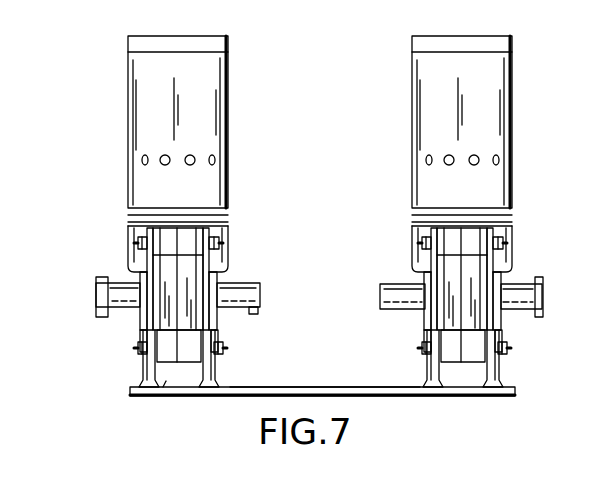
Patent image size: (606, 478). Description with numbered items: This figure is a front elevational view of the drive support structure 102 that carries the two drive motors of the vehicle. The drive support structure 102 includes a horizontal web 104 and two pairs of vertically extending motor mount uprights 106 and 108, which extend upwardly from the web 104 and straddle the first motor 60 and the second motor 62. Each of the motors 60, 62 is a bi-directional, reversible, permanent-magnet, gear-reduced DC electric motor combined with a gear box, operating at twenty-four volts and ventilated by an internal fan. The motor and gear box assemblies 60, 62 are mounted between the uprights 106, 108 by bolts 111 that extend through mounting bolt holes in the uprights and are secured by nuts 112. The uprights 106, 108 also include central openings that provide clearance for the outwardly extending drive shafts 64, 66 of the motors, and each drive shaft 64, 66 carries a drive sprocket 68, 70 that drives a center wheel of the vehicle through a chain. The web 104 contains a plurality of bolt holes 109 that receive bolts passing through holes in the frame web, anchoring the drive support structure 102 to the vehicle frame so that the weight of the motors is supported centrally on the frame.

The first motor 60 is at (237, 137).
The second motor 62 is at (401, 111).
The drive shaft 64 is at (118, 282).
The drive shaft 66 is at (518, 292).
The drive sprocket 68 is at (100, 281).
The drive sprocket 70 is at (545, 277).
The drive support structure 102 is at (127, 391).
The horizontal web 104 is at (325, 387).
The motor mount upright 106 is at (141, 336).
The motor mount upright 108 is at (230, 262).
The bolt hole 109 is at (158, 390).
The bolt 111 is at (130, 243).
The nut 112 is at (226, 243).